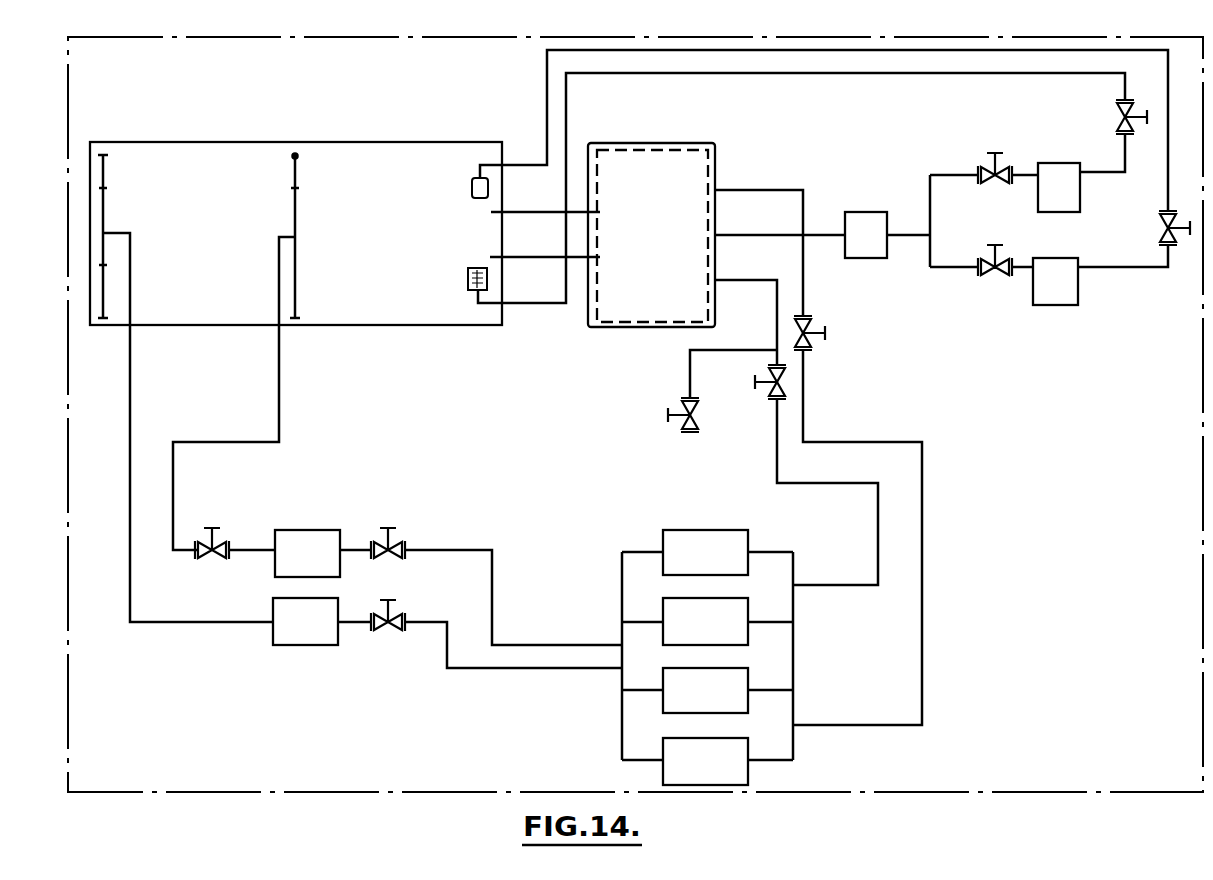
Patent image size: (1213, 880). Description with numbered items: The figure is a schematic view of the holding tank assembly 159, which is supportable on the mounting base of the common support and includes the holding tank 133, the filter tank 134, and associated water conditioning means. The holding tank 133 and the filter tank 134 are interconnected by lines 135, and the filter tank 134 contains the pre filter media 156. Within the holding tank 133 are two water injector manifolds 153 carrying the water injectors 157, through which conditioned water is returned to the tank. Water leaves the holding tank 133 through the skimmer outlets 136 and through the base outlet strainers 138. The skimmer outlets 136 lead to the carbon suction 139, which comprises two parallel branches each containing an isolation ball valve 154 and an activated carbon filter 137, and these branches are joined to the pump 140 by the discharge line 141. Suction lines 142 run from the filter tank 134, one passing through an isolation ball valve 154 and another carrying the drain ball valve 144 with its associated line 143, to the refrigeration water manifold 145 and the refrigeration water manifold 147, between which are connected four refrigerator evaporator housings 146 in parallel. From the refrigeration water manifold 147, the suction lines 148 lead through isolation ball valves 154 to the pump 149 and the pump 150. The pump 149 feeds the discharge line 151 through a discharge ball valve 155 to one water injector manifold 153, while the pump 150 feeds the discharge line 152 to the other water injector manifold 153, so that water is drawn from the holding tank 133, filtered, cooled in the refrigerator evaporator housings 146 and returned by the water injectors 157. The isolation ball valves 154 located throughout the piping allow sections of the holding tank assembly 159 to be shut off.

The holding tank 133 is at (341, 282).
The filter tank 134 is at (625, 304).
The lines 135 is at (565, 214).
The skimmer outlets 136 is at (532, 165).
The activated carbon filters 137 is at (1042, 201).
The base outlet strainers 138 is at (467, 277).
The carbon suction 139 is at (948, 172).
The pump 140 is at (849, 249).
The discharge line 141 is at (767, 232).
The suction lines 142 is at (786, 189).
The line 143 is at (757, 349).
The drain ball valve 144 is at (683, 410).
The refrigeration water manifold 145 is at (797, 643).
The refrigerator evaporator housings 146 is at (688, 566).
The refrigeration water manifold 147 is at (622, 598).
The suction lines 148 is at (494, 610).
The pump 149 is at (290, 567).
The pump 150 is at (288, 636).
The discharge line 151 is at (174, 514).
The discharge line 152 is at (205, 624).
The water injector manifolds 153 is at (110, 204).
The isolation ball valves 154 is at (770, 394).
The discharge ball valve 155 is at (222, 540).
The pre filter media 156 is at (633, 141).
The water injectors 157 is at (109, 223).
The holding tank assembly 159 is at (80, 774).